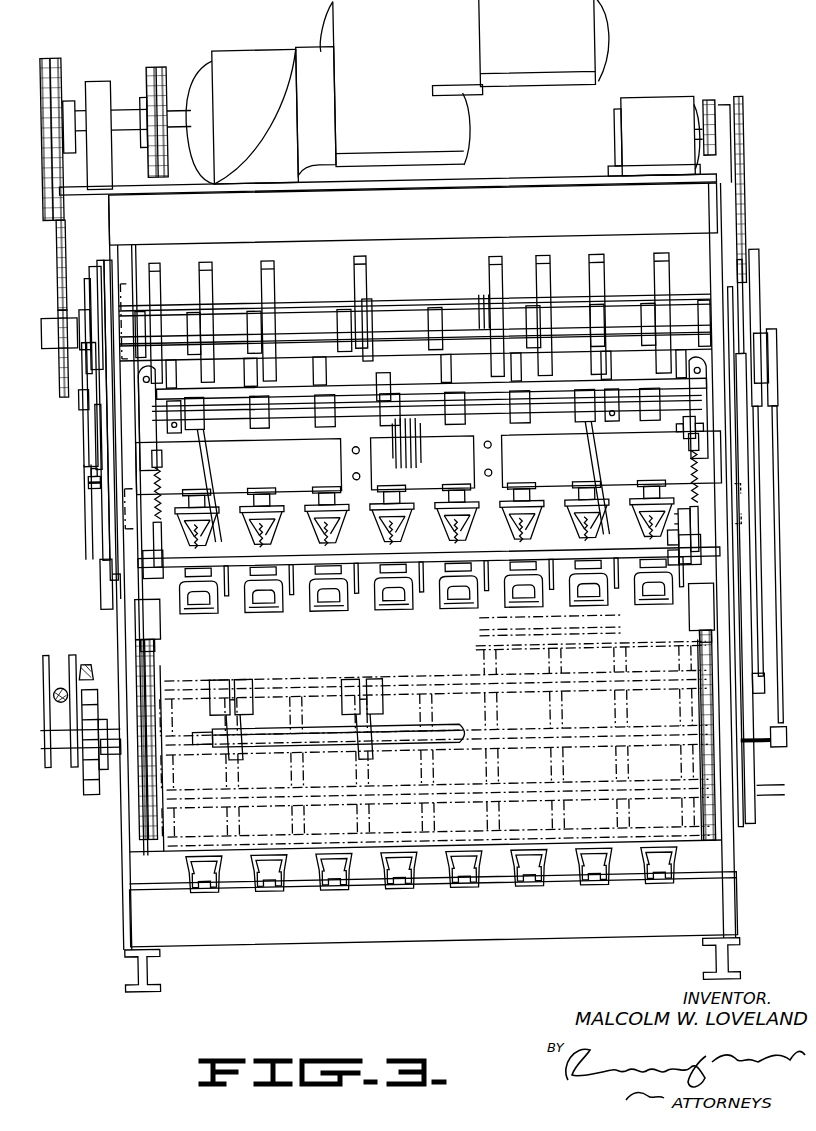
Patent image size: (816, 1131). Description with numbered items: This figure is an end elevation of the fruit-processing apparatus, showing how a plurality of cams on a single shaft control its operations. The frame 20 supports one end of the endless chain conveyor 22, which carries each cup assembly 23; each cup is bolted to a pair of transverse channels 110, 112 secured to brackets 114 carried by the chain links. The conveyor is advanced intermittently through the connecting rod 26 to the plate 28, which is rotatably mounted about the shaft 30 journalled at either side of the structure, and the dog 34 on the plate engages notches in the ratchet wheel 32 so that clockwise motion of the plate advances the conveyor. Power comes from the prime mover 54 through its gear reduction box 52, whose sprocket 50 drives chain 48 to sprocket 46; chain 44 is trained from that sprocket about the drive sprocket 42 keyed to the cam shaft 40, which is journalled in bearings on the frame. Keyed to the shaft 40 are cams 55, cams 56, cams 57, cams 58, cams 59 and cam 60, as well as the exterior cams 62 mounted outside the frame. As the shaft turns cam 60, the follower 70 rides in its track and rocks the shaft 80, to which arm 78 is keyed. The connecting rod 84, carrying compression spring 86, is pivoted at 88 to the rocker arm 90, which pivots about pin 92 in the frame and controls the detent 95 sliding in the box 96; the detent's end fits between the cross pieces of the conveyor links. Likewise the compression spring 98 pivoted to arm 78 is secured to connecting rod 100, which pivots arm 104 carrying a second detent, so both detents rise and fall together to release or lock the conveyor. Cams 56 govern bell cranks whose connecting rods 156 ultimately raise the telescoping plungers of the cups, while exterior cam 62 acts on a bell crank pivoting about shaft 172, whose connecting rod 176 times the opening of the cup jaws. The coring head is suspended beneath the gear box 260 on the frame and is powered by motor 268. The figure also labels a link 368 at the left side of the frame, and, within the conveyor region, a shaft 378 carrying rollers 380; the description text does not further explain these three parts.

The frame 20 is at (106, 866).
The endless chain conveyor 22 is at (129, 822).
The cup assembly 23 is at (406, 611).
The connecting rod 26 is at (58, 680).
The plate 28 is at (45, 760).
The shaft 30 is at (37, 730).
The ratchet wheel 32 is at (85, 785).
The dog 34 is at (83, 661).
The shaft 40 is at (295, 313).
The drive sprocket 42 is at (65, 364).
The chain 44 is at (66, 258).
The sprocket 46 is at (71, 53).
The chain 48 is at (168, 59).
The sprocket 50 is at (156, 74).
The gear reduction box 52 is at (241, 54).
The prime mover 54 is at (549, 84).
The cams 55 is at (66, 282).
The cams 56 is at (95, 292).
The cams 57 is at (166, 263).
The cams 58 is at (218, 264).
The cams 59 is at (279, 288).
The cam 60 is at (372, 270).
The exterior cams 62 is at (766, 284).
The follower 70 is at (375, 317).
The arm 78 is at (100, 435).
The shaft 80 is at (298, 390).
The connecting rod 84 is at (160, 507).
The compression spring 86 is at (689, 466).
The pivot 88 is at (696, 516).
The rocker arm 90 is at (174, 614).
The pin 92 is at (146, 544).
The detent 95 is at (152, 640).
The box 96 is at (158, 623).
The compression spring 98 is at (90, 480).
The connecting rod 100 is at (743, 507).
The arm 104 is at (100, 580).
The transverse channel 110 is at (605, 693).
The transverse channel 112 is at (607, 732).
The brackets 114 is at (160, 770).
The connecting rods 156 is at (779, 633).
The shaft 172 is at (228, 414).
The connecting rod 176 is at (760, 589).
The gear box 260 is at (509, 301).
The motor 268 is at (655, 136).
The link 368 is at (86, 456).
The roller shaft 378 is at (237, 727).
The rollers 380 is at (242, 681).